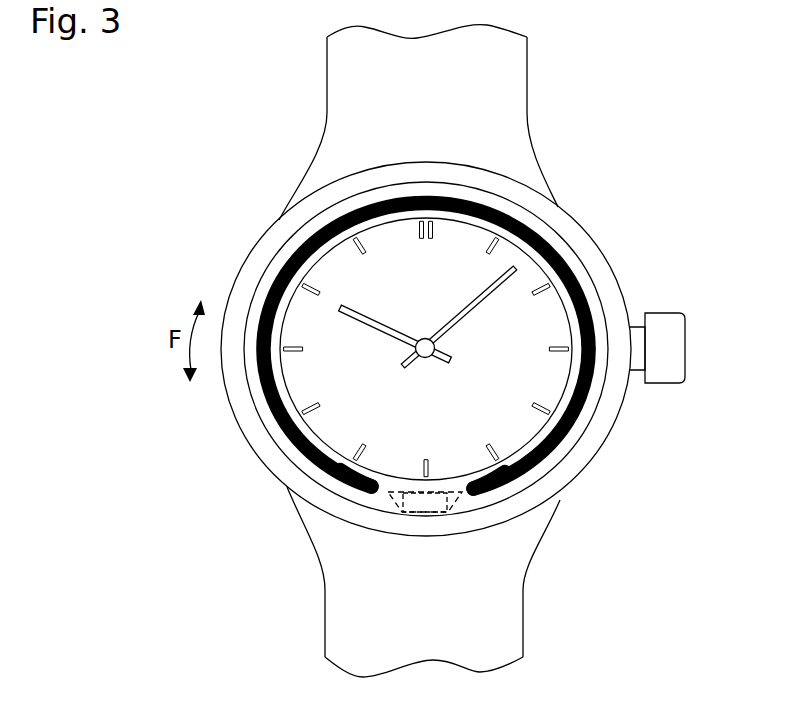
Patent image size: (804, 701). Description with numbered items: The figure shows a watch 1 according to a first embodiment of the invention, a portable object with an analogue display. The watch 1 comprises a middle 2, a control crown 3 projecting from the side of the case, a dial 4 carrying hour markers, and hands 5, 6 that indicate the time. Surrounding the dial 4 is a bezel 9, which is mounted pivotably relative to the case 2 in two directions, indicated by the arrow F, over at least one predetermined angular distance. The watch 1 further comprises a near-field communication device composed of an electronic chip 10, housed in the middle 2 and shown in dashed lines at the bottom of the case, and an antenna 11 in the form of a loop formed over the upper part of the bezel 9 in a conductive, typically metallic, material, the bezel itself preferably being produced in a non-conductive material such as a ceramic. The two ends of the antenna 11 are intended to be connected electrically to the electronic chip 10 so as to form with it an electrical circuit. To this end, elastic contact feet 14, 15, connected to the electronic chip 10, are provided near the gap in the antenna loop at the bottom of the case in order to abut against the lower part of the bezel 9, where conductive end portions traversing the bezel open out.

The watch 1 is at (150, 165).
The middle 2 is at (605, 415).
The control crown 3 is at (665, 347).
The dial 4 is at (300, 373).
The hand 5 is at (348, 305).
The hand 6 is at (517, 270).
The bezel 9 is at (500, 180).
The electronic chip 10 is at (427, 505).
The antenna 11 is at (285, 430).
The elastic contact foot 14 is at (387, 493).
The elastic contact foot 15 is at (462, 493).